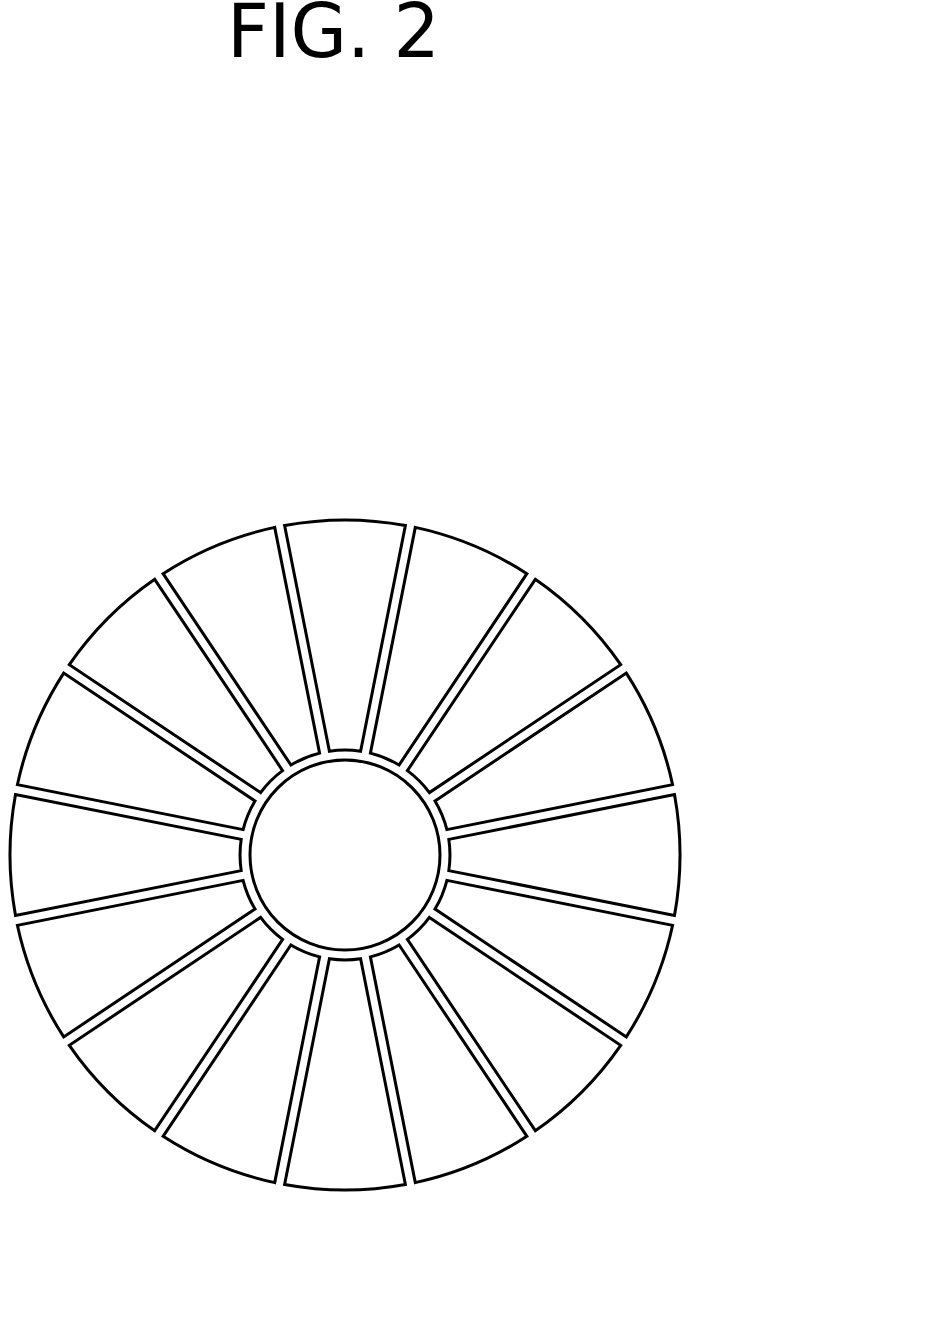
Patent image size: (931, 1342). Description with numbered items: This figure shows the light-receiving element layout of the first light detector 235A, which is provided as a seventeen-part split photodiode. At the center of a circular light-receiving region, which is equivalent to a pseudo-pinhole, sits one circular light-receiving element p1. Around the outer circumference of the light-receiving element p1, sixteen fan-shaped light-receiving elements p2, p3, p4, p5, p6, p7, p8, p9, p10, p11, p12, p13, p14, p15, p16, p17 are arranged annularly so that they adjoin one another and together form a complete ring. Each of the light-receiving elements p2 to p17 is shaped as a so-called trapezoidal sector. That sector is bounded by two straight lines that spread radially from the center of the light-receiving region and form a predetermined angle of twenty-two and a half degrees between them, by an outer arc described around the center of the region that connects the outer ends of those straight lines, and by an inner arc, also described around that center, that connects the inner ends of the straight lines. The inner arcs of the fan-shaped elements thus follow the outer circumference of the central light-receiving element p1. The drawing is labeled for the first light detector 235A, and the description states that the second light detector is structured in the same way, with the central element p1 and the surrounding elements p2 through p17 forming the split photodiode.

The first light detector 235A is at (581, 481).
The light-receiving element p1 is at (345, 855).
The fan-shaped light-receiving element p2 is at (345, 635).
The fan-shaped light-receiving element p3 is at (448, 646).
The fan-shaped light-receiving element p4 is at (513, 685).
The fan-shaped light-receiving element p5 is at (554, 751).
The fan-shaped light-receiving element p6 is at (564, 855).
The fan-shaped light-receiving element p7 is at (554, 958).
The fan-shaped light-receiving element p8 is at (513, 1023).
The fan-shaped light-receiving element p9 is at (448, 1064).
The fan-shaped light-receiving element p10 is at (345, 1074).
The fan-shaped light-receiving element p11 is at (241, 1064).
The fan-shaped light-receiving element p12 is at (175, 1023).
The fan-shaped light-receiving element p13 is at (136, 958).
The fan-shaped light-receiving element p14 is at (125, 855).
The fan-shaped light-receiving element p15 is at (136, 751).
The fan-shaped light-receiving element p16 is at (175, 685).
The fan-shaped light-receiving element p17 is at (241, 646).